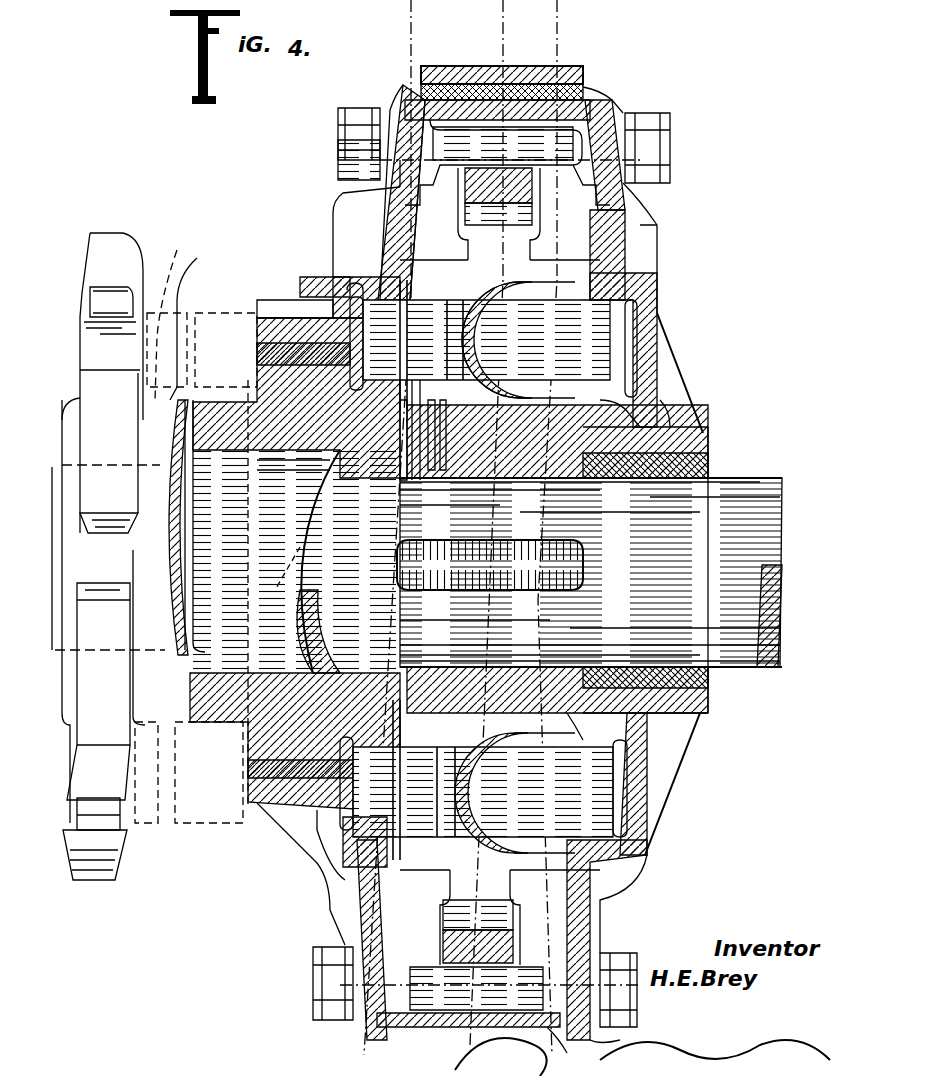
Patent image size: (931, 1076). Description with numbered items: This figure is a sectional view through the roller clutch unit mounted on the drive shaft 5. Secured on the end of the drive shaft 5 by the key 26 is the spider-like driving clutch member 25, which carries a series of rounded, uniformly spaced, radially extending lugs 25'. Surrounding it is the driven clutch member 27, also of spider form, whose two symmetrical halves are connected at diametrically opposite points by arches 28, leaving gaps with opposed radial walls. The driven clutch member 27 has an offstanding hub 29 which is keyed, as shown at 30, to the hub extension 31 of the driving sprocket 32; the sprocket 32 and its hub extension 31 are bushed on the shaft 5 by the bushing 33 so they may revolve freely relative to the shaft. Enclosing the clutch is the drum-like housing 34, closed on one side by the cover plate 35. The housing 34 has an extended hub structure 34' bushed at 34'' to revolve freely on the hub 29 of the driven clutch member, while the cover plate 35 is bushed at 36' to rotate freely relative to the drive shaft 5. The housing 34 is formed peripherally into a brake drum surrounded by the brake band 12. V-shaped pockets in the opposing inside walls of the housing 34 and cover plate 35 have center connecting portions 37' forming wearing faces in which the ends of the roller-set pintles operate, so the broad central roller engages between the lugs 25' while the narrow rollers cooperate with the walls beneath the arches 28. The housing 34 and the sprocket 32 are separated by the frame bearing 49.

The drive shaft 5 is at (730, 555).
The brake band 12 is at (545, 75).
The driving clutch member 25 is at (481, 544).
The lugs 25' is at (697, 584).
The key 26 is at (545, 560).
The driven clutch member 27 is at (433, 470).
The arches 28 is at (620, 185).
The hub 29 is at (260, 440).
The key 30 is at (265, 530).
The hub extension 31 is at (198, 321).
The driving sprocket 32 is at (100, 272).
The bushing 33 is at (290, 580).
The housing 34 is at (345, 192).
The hub structure 34' is at (265, 289).
The bushing 34'' is at (301, 298).
The cover plate 35 is at (610, 245).
The bushing 36' is at (696, 570).
The center connecting portions 37' is at (417, 325).
The frame bearing 49 is at (173, 313).